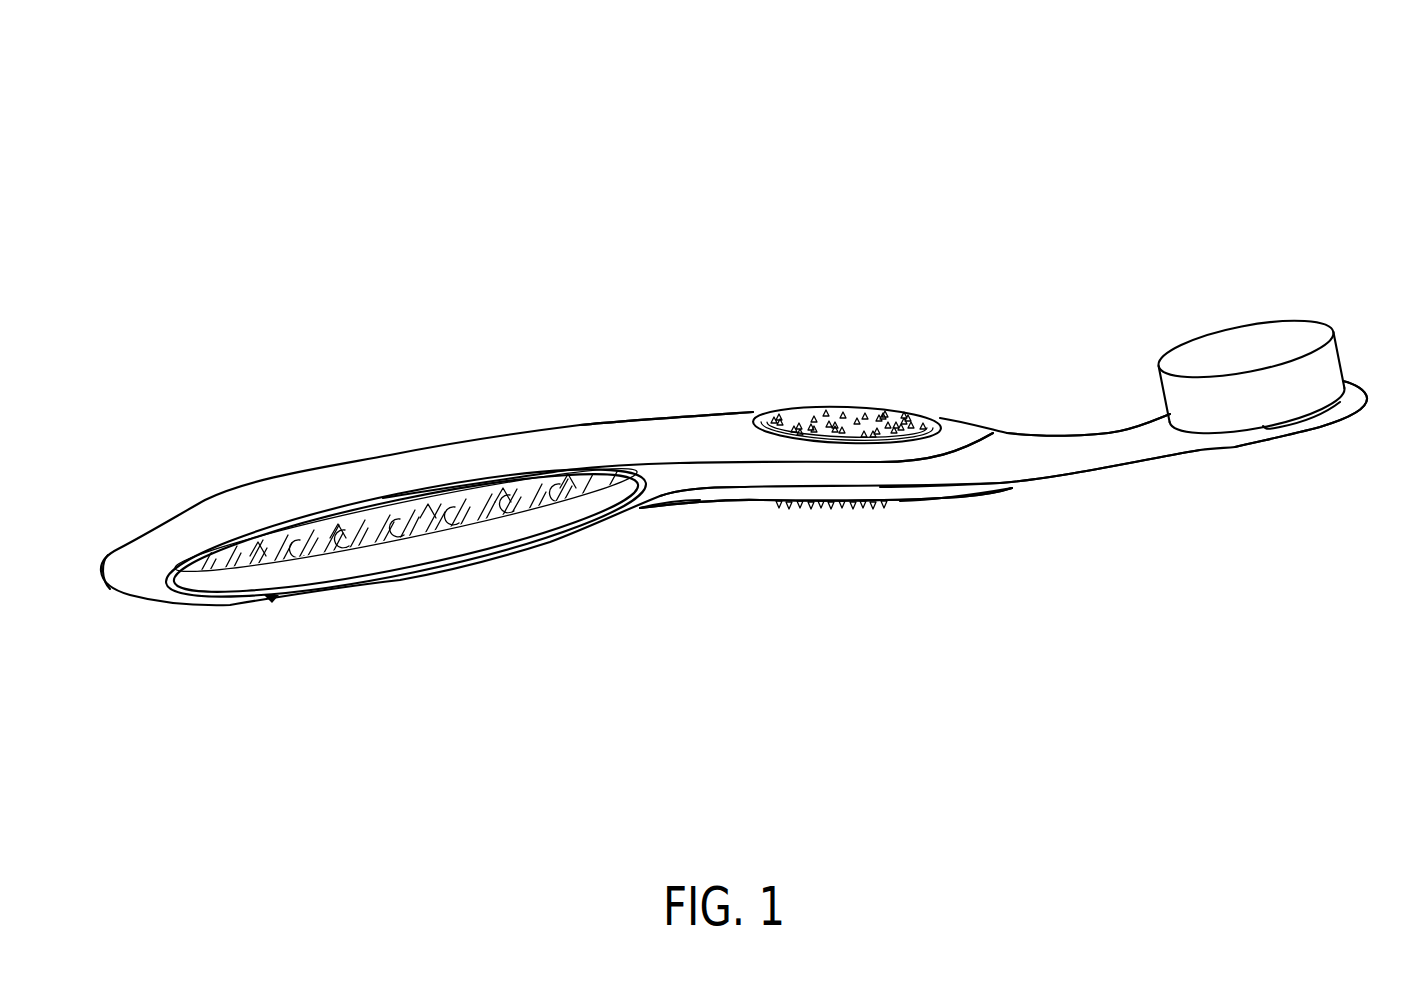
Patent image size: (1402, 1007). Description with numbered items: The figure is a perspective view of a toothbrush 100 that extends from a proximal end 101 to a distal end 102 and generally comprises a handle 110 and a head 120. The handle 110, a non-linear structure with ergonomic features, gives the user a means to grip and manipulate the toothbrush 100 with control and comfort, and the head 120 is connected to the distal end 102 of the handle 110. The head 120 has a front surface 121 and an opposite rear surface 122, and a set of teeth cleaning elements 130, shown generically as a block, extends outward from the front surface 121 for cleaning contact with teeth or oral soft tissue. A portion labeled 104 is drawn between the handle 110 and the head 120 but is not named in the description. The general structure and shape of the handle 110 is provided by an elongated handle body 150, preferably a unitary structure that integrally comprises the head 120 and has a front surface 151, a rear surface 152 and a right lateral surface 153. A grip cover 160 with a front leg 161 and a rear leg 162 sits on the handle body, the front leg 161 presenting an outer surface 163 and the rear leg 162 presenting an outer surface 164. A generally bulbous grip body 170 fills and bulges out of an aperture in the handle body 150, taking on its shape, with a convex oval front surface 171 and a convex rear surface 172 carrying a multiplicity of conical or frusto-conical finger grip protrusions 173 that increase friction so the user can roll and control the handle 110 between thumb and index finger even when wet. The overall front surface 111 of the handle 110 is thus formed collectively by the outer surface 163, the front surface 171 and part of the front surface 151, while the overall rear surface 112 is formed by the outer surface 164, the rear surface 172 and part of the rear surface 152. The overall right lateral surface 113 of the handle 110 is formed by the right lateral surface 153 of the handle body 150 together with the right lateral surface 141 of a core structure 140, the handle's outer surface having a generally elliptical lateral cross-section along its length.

The toothbrush 100 is at (1067, 124).
The proximal end 101 is at (110, 578).
The distal end 102 is at (1357, 385).
The neck 104 is at (1137, 433).
The handle 110 is at (353, 423).
The front surface 111 is at (548, 425).
The rear surface 112 is at (738, 516).
The right lateral surface 113 is at (986, 480).
The head 120 is at (1239, 473).
The front surface 121 is at (1278, 423).
The rear surface 122 is at (1317, 428).
The set of teeth cleaning elements 130 is at (1347, 332).
The core structure 140 is at (369, 560).
The right lateral surface 141 is at (497, 520).
The elongated handle body 150 is at (774, 495).
The front surface 151 is at (1022, 447).
The rear surface 152 is at (1133, 468).
The right lateral surface 153 is at (692, 477).
The grip cover 160 is at (213, 498).
The front leg 161 is at (478, 455).
The rear leg 162 is at (654, 503).
The outer surface 163 is at (667, 432).
The outer surface 164 is at (220, 600).
The grip body 170 is at (891, 391).
The front surface 171 is at (831, 407).
The rear surface 172 is at (845, 505).
The finger grip protrusions 173 is at (806, 405).